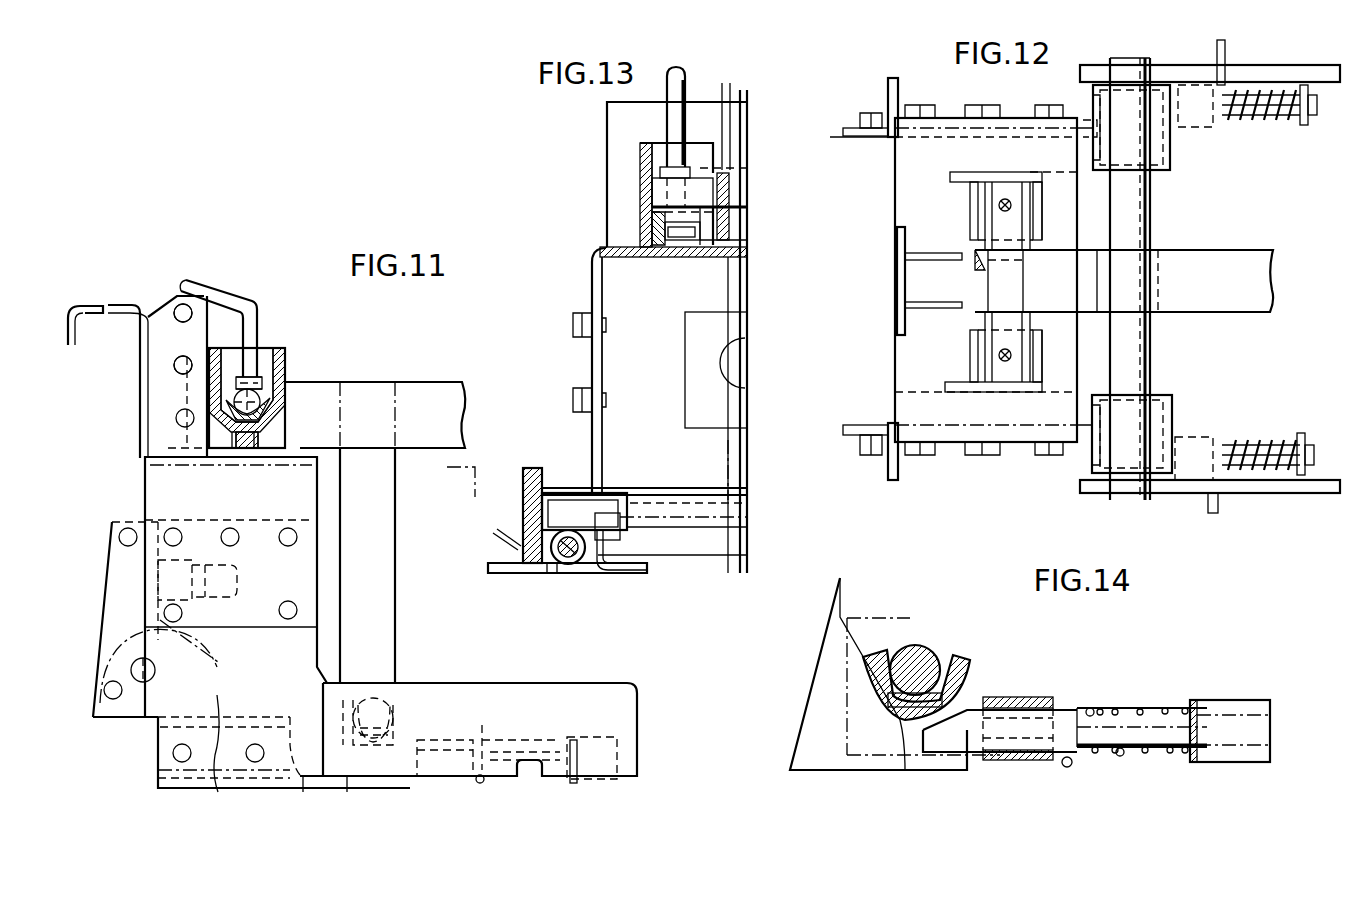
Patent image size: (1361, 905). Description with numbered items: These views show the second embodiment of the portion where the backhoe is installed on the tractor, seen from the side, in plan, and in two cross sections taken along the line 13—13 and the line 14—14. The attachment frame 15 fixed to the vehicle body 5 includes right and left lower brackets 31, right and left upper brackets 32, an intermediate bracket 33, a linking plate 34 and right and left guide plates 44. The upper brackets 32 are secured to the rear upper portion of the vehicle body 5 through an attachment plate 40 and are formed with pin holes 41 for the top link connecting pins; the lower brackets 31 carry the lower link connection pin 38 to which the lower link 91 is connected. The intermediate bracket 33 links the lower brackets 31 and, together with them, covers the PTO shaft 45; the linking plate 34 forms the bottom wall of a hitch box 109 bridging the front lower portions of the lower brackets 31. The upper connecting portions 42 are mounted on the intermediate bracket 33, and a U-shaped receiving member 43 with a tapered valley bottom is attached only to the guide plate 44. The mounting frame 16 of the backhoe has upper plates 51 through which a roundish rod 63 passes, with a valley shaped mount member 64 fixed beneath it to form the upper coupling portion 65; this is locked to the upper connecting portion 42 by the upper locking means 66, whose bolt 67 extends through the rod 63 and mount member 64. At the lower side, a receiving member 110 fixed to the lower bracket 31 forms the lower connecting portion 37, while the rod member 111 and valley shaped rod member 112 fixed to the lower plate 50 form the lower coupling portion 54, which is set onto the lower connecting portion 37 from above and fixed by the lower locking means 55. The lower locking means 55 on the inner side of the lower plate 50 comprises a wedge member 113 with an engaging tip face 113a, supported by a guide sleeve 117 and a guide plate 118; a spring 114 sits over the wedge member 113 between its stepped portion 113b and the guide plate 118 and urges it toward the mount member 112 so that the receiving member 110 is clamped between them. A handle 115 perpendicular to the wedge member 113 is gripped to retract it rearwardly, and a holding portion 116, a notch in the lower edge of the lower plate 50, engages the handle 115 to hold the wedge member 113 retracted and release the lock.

In FIG. 11, the vehicle body 5 is at (85, 330).
In FIG. 12, the vehicle body 5 is at (860, 398).
In FIG. 11, the line 13— 13 is at (250, 276).
In FIG. 12, the line 14— 14 is at (1050, 455).
In FIG. 11, the attachment frame 15 is at (176, 263).
In FIG. 12, the attachment frame 15 is at (932, 482).
In FIG. 11, the mounting frame 16 is at (447, 341).
In FIG. 12, the mounting frame 16 is at (1246, 520).
In FIG. 11, the lower bracket 31 is at (215, 759).
In FIG. 13, the lower bracket 31 is at (592, 432).
In FIG. 12, the lower bracket 31 is at (865, 128).
In FIG. 14, the lower bracket 31 is at (820, 700).
In FIG. 11, the upper bracket 32 is at (157, 410).
In FIG. 12, the upper bracket 32 is at (905, 305).
In FIG. 11, the intermediate bracket 33 is at (157, 493).
In FIG. 13, the intermediate bracket 33 is at (590, 353).
In FIG. 12, the intermediate bracket 33 is at (950, 442).
In FIG. 11, the linking plate 34 is at (158, 778).
In FIG. 13, the linking plate 34 is at (703, 565).
In FIG. 11, the lower connecting portion 37 is at (349, 750).
In FIG. 12, the lower connecting portion 37 is at (1088, 455).
In FIG. 14, the lower connecting portion 37 is at (870, 725).
In FIG. 11, the lower link connection pin 38 is at (138, 668).
In FIG. 12, the lower link connection pin 38 is at (888, 85).
In FIG. 11, the attachment plate 40 is at (128, 310).
In FIG. 12, the attachment plate 40 is at (897, 237).
In FIG. 11, the pin hole 41 is at (175, 364).
In FIG. 11, the upper connecting portion 42 is at (306, 350).
In FIG. 13, the upper connecting portion 42 is at (660, 232).
In FIG. 12, the upper connecting portion 42 is at (950, 374).
In FIG. 11, the receiving member 43 is at (272, 415).
In FIG. 13, the receiving member 43 is at (652, 225).
In FIG. 12, the receiving member 43 is at (1040, 212).
In FIG. 11, the guide plate 44 is at (268, 352).
In FIG. 13, the guide plate 44 is at (640, 182).
In FIG. 12, the guide plate 44 is at (1010, 176).
In FIG. 11, the PTO shaft 45 is at (240, 580).
In FIG. 13, the PTO shaft 45 is at (722, 365).
In FIG. 11, the lower plate 50 is at (590, 683).
In FIG. 13, the lower plate 50 is at (528, 490).
In FIG. 12, the lower plate 50 is at (1303, 65).
In FIG. 11, the upper plate 51 is at (437, 388).
In FIG. 13, the upper plate 51 is at (747, 222).
In FIG. 12, the upper plate 51 is at (1172, 250).
In FIG. 11, the lower coupling portion 54 is at (395, 715).
In FIG. 12, the lower coupling portion 54 is at (1252, 333).
In FIG. 14, the lower coupling portion 54 is at (910, 577).
In FIG. 11, the spring unit 55 is at (510, 748).
In FIG. 13, the spring unit 55 is at (603, 548).
In FIG. 12, the spring unit 55 is at (1300, 141).
In FIG. 14, the spring unit 55 is at (1220, 680).
In FIG. 11, the roundish rod 63 is at (258, 392).
In FIG. 13, the roundish rod 63 is at (682, 192).
In FIG. 12, the roundish rod 63 is at (1012, 290).
In FIG. 11, the valley shaped mount member 64 is at (262, 395).
In FIG. 13, the valley shaped mount member 64 is at (675, 172).
In FIG. 12, the valley shaped mount member 64 is at (985, 223).
In FIG. 11, the upper coupling portion 65 is at (380, 338).
In FIG. 13, the upper coupling portion 65 is at (716, 172).
In FIG. 12, the upper coupling portion 65 is at (978, 265).
In FIG. 11, the upper locking means 66 is at (249, 283).
In FIG. 13, the upper locking means 66 is at (692, 150).
In FIG. 11, the bolt 67 is at (248, 318).
In FIG. 13, the bolt 67 is at (672, 118).
In FIG. 12, the bolt 67 is at (1000, 202).
In FIG. 11, the lower link 91 is at (218, 665).
In FIG. 11, the hitch box 109 is at (305, 801).
In FIG. 11, the receiving member 110 is at (335, 735).
In FIG. 13, the receiving member 110 is at (575, 500).
In FIG. 12, the receiving member 110 is at (1165, 460).
In FIG. 14, the receiving member 110 is at (903, 740).
In FIG. 11, the rod member 111 is at (378, 700).
In FIG. 13, the rod member 111 is at (680, 488).
In FIG. 12, the rod member 111 is at (1140, 345).
In FIG. 14, the rod member 111 is at (915, 655).
In FIG. 11, the valley shaped rod member 112 is at (408, 690).
In FIG. 13, the valley shaped rod member 112 is at (615, 495).
In FIG. 12, the valley shaped rod member 112 is at (1155, 415).
In FIG. 14, the valley shaped rod member 112 is at (950, 660).
In FIG. 11, the wedge member 113 is at (508, 733).
In FIG. 13, the wedge member 113 is at (560, 566).
In FIG. 12, the wedge member 113 is at (1253, 120).
In FIG. 14, the wedge member 113 is at (1080, 720).
In FIG. 14, the engaging tip face 113a is at (1000, 725).
In FIG. 14, the stepped portion 113b is at (1088, 710).
In FIG. 12, the spring 114 is at (1257, 118).
In FIG. 14, the spring 114 is at (1170, 710).
In FIG. 11, the handle 115 is at (459, 801).
In FIG. 13, the handle 115 is at (505, 573).
In FIG. 12, the handle 115 is at (1215, 52).
In FIG. 14, the handle 115 is at (1080, 765).
In FIG. 11, the holding portion 116 is at (545, 780).
In FIG. 13, the holding portion 116 is at (528, 553).
In FIG. 14, the holding portion 116 is at (1125, 765).
In FIG. 11, the guide sleeve 117 is at (440, 785).
In FIG. 13, the guide sleeve 117 is at (580, 563).
In FIG. 12, the guide sleeve 117 is at (1185, 462).
In FIG. 14, the guide sleeve 117 is at (1050, 700).
In FIG. 11, the guide plate 118 is at (605, 785).
In FIG. 12, the guide plate 118 is at (1300, 482).
In FIG. 14, the guide plate 118 is at (1215, 700).